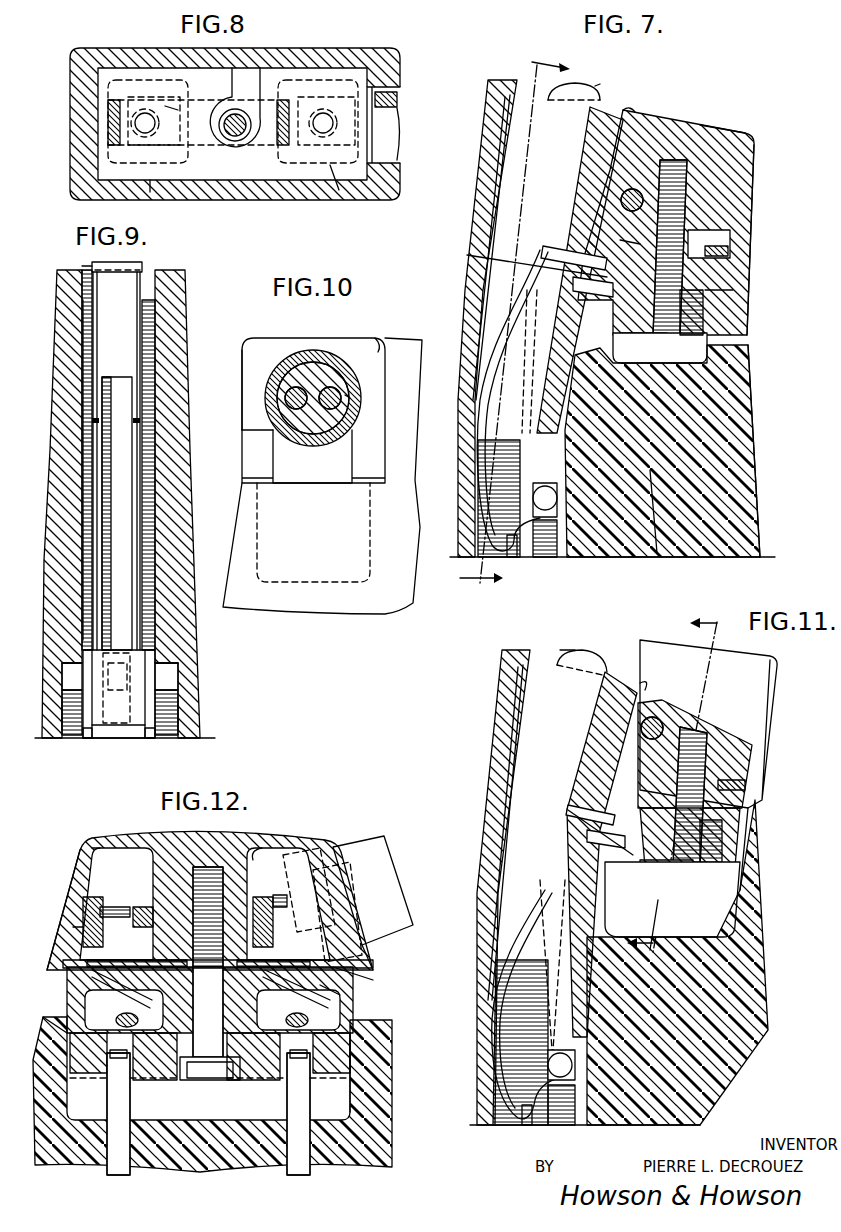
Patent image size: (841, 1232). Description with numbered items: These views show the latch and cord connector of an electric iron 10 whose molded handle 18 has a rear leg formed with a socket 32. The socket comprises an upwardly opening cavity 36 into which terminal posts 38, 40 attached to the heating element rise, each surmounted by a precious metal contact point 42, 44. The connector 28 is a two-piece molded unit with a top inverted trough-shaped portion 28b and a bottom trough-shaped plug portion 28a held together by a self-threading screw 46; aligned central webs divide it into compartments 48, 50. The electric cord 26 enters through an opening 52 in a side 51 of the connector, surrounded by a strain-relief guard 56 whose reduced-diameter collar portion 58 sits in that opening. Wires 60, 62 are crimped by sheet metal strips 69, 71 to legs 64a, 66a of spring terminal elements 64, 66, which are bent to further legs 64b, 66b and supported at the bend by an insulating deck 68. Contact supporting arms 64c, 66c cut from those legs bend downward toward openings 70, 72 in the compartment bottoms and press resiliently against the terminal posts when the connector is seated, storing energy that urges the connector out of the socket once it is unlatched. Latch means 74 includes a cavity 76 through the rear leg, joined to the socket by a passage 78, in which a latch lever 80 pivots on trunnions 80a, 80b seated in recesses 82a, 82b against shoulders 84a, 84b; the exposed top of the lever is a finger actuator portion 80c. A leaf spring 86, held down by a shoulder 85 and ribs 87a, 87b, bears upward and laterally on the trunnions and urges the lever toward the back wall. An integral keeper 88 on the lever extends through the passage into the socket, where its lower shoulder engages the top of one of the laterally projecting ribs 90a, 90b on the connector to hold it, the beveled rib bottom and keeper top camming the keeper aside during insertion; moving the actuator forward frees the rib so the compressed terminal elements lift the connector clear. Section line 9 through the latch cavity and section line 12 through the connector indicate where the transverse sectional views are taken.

In FIG. 7, the electric iron 10 is at (758, 422).
In FIG. 9, the handle 18 is at (183, 297).
In FIG. 10, the handle 18 is at (355, 607).
In FIG. 7, the handle 18 is at (747, 392).
In FIG. 11, the handle 18 is at (762, 964).
In FIG. 12, the handle 18 is at (380, 1053).
In FIG. 10, the electric cord 26 is at (315, 420).
In FIG. 8, the connector 28 is at (341, 54).
In FIG. 10, the connector 28 is at (302, 340).
In FIG. 7, the connector 28 is at (757, 172).
In FIG. 11, the connector 28 is at (760, 720).
In FIG. 12, the connector 28 is at (303, 842).
In FIG. 10, the plug portion 28a is at (368, 543).
In FIG. 7, the plug portion 28a is at (733, 283).
In FIG. 11, the plug portion 28a is at (717, 830).
In FIG. 12, the plug portion 28a is at (75, 1004).
In FIG. 10, the top portion 28b is at (243, 370).
In FIG. 7, the top portion 28b is at (747, 210).
In FIG. 11, the top portion 28b is at (760, 764).
In FIG. 12, the top portion 28b is at (103, 838).
In FIG. 10, the socket 32 is at (380, 340).
In FIG. 7, the socket 32 is at (648, 113).
In FIG. 11, the socket 32 is at (643, 682).
In FIG. 7, the cavity 36 is at (703, 357).
In FIG. 11, the cavity 36 is at (710, 913).
In FIG. 12, the cavity 36 is at (378, 1097).
In FIG. 12, the terminal post 38 is at (118, 1163).
In FIG. 7, the terminal post 40 is at (657, 553).
In FIG. 11, the terminal post 40 is at (658, 901).
In FIG. 12, the terminal post 40 is at (298, 1163).
In FIG. 12, the contact point 42 is at (103, 1073).
In FIG. 12, the contact point 44 is at (288, 1093).
In FIG. 8, the self-threading screw 46 is at (226, 128).
In FIG. 7, the self-threading screw 46 is at (690, 227).
In FIG. 11, the self-threading screw 46 is at (700, 880).
In FIG. 12, the self-threading screw 46 is at (222, 1072).
In FIG. 12, the compartment 48 is at (100, 863).
In FIG. 7, the compartment 50 is at (722, 133).
In FIG. 12, the compartment 50 is at (253, 860).
In FIG. 10, the side 51 is at (257, 432).
In FIG. 12, the side 51 is at (373, 947).
In FIG. 10, the opening 52 is at (350, 398).
In FIG. 12, the opening 52 is at (350, 847).
In FIG. 10, the guard 56 is at (283, 355).
In FIG. 12, the guard 56 is at (380, 868).
In FIG. 12, the collar portion 58 is at (370, 968).
In FIG. 10, the electrical wire 60 is at (290, 398).
In FIG. 12, the electrical wire 60 is at (267, 907).
In FIG. 10, the electrical wire 62 is at (318, 388).
In FIG. 7, the electrical wire 62 is at (632, 200).
In FIG. 11, the electrical wire 62 is at (656, 716).
In FIG. 12, the electrical wire 62 is at (107, 918).
In FIG. 8, the terminal element 64 is at (377, 55).
In FIG. 12, the terminal element 64 is at (282, 1023).
In FIG. 8, the leg 64a is at (283, 147).
In FIG. 12, the leg 64a is at (338, 913).
In FIG. 8, the leg 64b is at (399, 74).
In FIG. 12, the leg 64b is at (340, 995).
In FIG. 8, the contact supporting arm 64c is at (339, 190).
In FIG. 12, the contact supporting arm 64c is at (312, 1015).
In FIG. 8, the terminal element 66 is at (176, 68).
In FIG. 12, the terminal element 66 is at (133, 990).
In FIG. 8, the leg 66a is at (110, 114).
In FIG. 12, the leg 66a is at (93, 898).
In FIG. 8, the leg 66b is at (150, 192).
In FIG. 12, the leg 66b is at (122, 967).
In FIG. 8, the contact supporting arm 66c is at (178, 110).
In FIG. 12, the contact supporting arm 66c is at (118, 1016).
In FIG. 8, the insulating deck 68 is at (273, 75).
In FIG. 7, the insulating deck 68 is at (730, 249).
In FIG. 11, the insulating deck 68 is at (748, 791).
In FIG. 12, the insulating deck 68 is at (117, 954).
In FIG. 12, the strip of sheet metal 69 is at (273, 955).
In FIG. 7, the opening 70 is at (632, 246).
In FIG. 12, the opening 70 is at (352, 1080).
In FIG. 12, the strip of sheet metal 71 is at (73, 927).
In FIG. 12, the opening 72 is at (58, 1034).
In FIG. 9, the latch means 74 is at (84, 266).
In FIG. 7, the latch means 74 is at (595, 86).
In FIG. 11, the latch means 74 is at (567, 648).
In FIG. 9, the cavity 76 is at (83, 358).
In FIG. 7, the cavity 76 is at (495, 220).
In FIG. 11, the cavity 76 is at (515, 743).
In FIG. 7, the passage 78 is at (580, 245).
In FIG. 11, the passage 78 is at (580, 807).
In FIG. 9, the latch lever 80 is at (105, 303).
In FIG. 7, the latch lever 80 is at (543, 158).
In FIG. 11, the latch lever 80 is at (563, 688).
In FIG. 9, the trunnion 80a is at (75, 681).
In FIG. 9, the trunnion 80b is at (172, 680).
In FIG. 7, the trunnion 80b is at (602, 550).
In FIG. 11, the trunnion 80b is at (620, 1125).
In FIG. 9, the finger actuator portion 80c is at (137, 264).
In FIG. 7, the finger actuator portion 80c is at (597, 100).
In FIG. 11, the finger actuator portion 80c is at (603, 645).
In FIG. 9, the recess 82a is at (67, 720).
In FIG. 9, the recess 82b is at (172, 714).
In FIG. 7, the recess 82b is at (545, 545).
In FIG. 11, the recess 82b is at (565, 1110).
In FIG. 9, the shoulder 84a is at (62, 664).
In FIG. 9, the shoulder 84b is at (175, 668).
In FIG. 7, the shoulder 84b is at (458, 483).
In FIG. 11, the shoulder 84b is at (562, 965).
In FIG. 7, the shoulder 85 is at (580, 548).
In FIG. 11, the shoulder 85 is at (600, 1110).
In FIG. 9, the leaf spring 86 is at (113, 513).
In FIG. 7, the leaf spring 86 is at (500, 358).
In FIG. 11, the leaf spring 86 is at (520, 905).
In FIG. 9, the rib 87a is at (87, 733).
In FIG. 9, the rib 87b is at (150, 733).
In FIG. 7, the rib 87b is at (527, 548).
In FIG. 11, the rib 87b is at (535, 1118).
In FIG. 7, the keeper 88 is at (526, 261).
In FIG. 11, the keeper 88 is at (623, 856).
In FIG. 7, the rib 90a is at (587, 283).
In FIG. 11, the rib 90a is at (622, 830).
In FIG. 7, the rib 90b is at (703, 318).
In FIG. 11, the rib 90b is at (727, 846).
In FIG. 7, the section line 9- 9 is at (511, 322).
In FIG. 11, the soleplate 12 is at (692, 791).